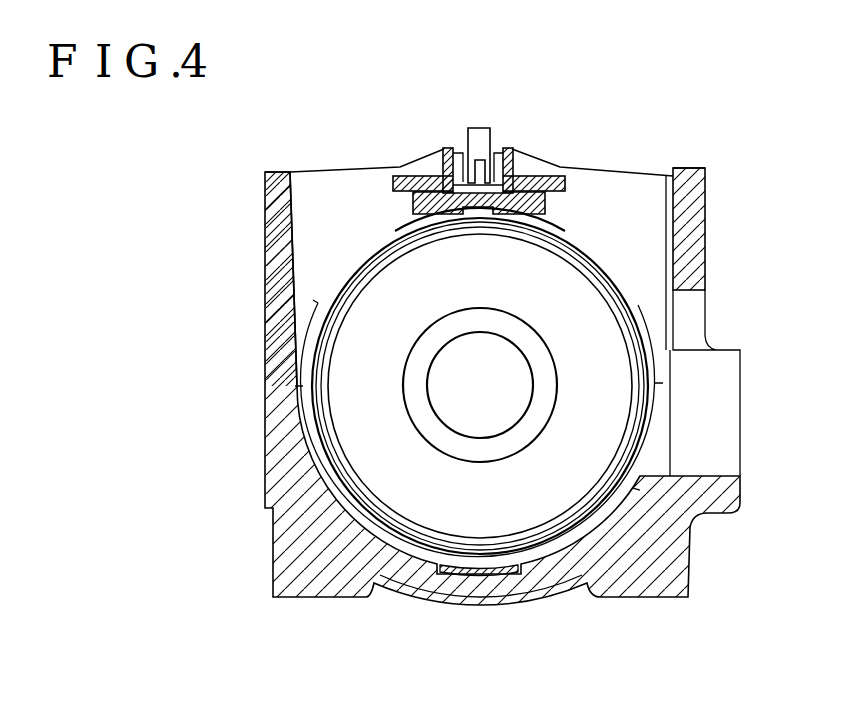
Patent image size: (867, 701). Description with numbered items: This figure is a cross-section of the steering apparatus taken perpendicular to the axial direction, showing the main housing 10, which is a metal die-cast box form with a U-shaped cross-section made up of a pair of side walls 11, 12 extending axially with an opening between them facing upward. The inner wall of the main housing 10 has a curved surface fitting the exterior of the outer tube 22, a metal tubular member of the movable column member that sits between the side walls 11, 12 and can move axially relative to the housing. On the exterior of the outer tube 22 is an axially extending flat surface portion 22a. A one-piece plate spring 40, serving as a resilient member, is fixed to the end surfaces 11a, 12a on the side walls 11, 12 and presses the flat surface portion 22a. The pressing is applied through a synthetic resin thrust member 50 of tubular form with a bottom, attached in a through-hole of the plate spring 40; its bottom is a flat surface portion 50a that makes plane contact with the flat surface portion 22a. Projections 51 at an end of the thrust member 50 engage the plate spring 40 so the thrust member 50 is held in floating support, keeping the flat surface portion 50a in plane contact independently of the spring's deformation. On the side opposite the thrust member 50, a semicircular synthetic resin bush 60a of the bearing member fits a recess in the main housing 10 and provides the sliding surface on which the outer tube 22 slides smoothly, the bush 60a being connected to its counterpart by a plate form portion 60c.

The main housing 10 is at (250, 324).
The side wall 11 is at (263, 175).
The end surface 11a is at (278, 168).
The side wall 12 is at (690, 183).
The end surface 12a is at (689, 168).
The outer tube 22 is at (590, 257).
The flat surface portion 22a is at (403, 222).
The plate spring 40 is at (535, 188).
The thrust member 50 is at (450, 138).
The flat surface portion 50a is at (553, 215).
The projection 51 is at (480, 137).
The bush 60a is at (333, 492).
The plate form portion 60c is at (487, 572).